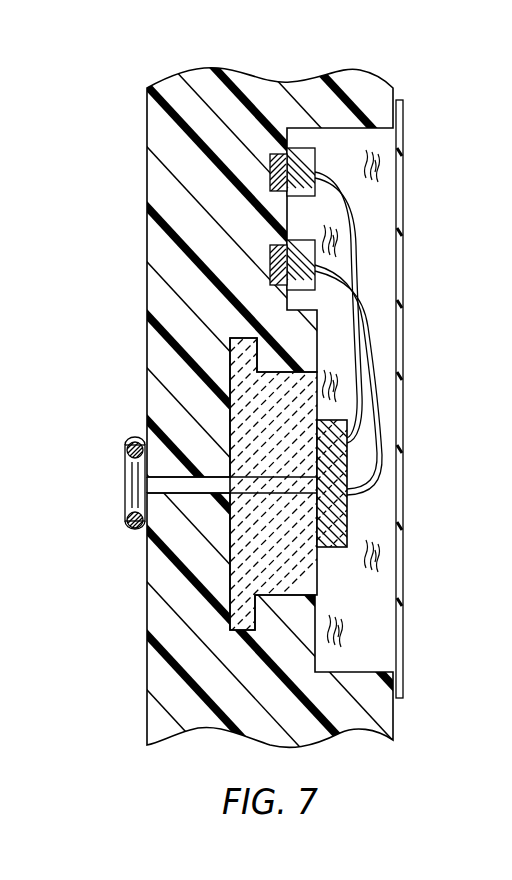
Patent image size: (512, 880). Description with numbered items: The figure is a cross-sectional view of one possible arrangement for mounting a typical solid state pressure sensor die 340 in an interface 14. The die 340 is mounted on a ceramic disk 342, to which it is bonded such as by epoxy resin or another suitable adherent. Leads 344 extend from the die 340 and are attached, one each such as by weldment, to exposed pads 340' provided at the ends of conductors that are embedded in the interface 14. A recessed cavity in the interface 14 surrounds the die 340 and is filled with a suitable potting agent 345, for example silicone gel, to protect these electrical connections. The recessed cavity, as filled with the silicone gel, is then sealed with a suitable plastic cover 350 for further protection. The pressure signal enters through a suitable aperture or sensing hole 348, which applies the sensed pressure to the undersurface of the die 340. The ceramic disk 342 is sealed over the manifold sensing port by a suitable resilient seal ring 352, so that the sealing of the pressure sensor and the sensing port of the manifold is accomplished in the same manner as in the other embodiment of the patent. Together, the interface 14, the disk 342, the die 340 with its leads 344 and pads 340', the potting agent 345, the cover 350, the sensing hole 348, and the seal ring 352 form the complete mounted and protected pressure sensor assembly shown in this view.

The interface 14 is at (147, 185).
The solid state pressure sensor die 340 is at (401, 495).
The exposed pads 340' is at (357, 163).
The ceramic disk 342 is at (283, 547).
The leads 344 is at (372, 383).
The potting agent 345 is at (377, 167).
The sensing hole 348 is at (196, 493).
The plastic cover 350 is at (403, 457).
The resilient seal ring 352 is at (131, 437).